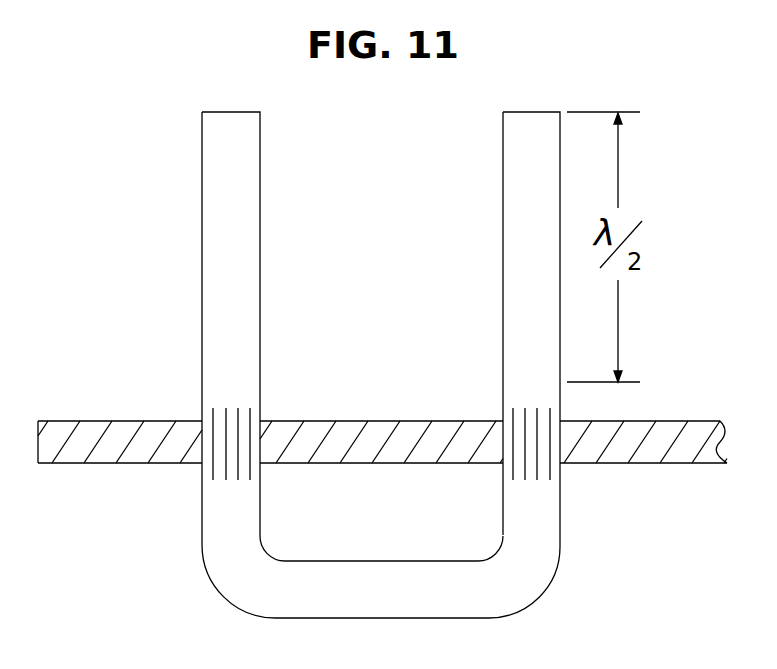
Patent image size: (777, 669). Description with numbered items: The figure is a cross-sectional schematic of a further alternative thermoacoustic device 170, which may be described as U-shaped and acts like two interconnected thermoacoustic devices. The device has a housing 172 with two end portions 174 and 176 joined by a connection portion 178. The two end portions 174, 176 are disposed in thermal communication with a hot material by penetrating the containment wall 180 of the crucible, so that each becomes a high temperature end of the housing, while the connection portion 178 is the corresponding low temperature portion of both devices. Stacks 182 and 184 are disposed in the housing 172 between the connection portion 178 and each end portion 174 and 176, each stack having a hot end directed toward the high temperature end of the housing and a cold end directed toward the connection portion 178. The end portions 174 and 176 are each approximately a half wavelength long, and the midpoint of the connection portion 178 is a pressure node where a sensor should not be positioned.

The thermoacoustic device 170 is at (147, 164).
The housing 172 is at (202, 284).
The end portion 174 is at (261, 153).
The end portion 176 is at (502, 163).
The connection portion 178 is at (368, 561).
The containment wall 180 is at (637, 450).
The stack 182 is at (228, 463).
The stack 184 is at (538, 470).